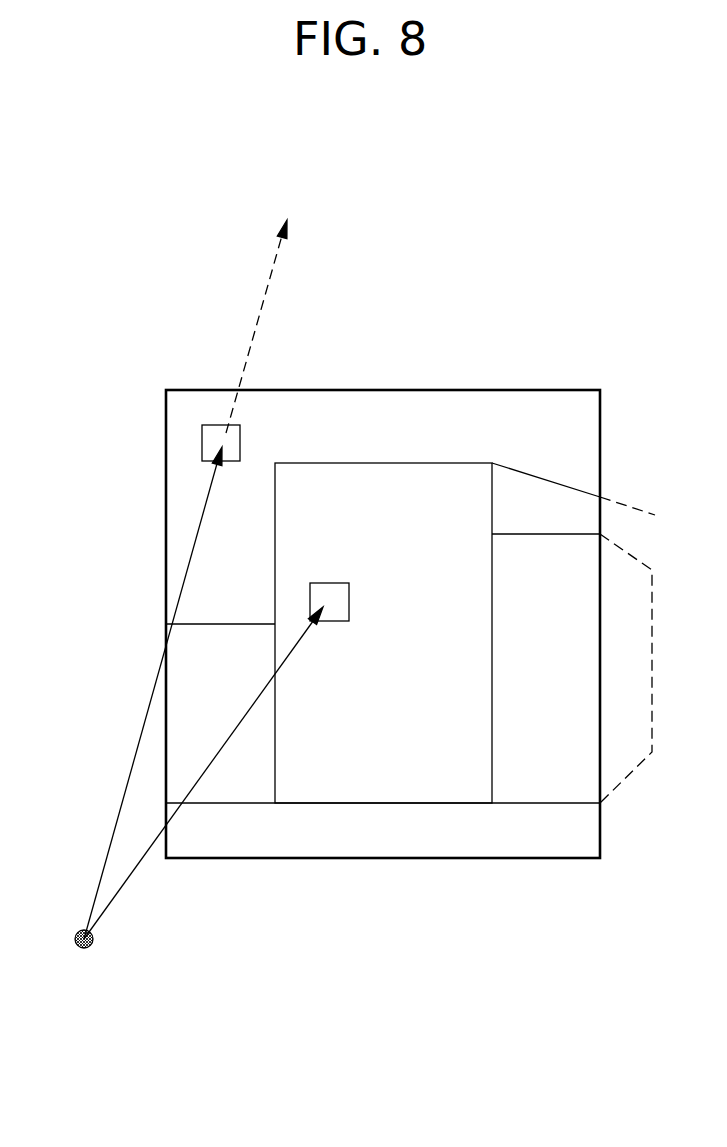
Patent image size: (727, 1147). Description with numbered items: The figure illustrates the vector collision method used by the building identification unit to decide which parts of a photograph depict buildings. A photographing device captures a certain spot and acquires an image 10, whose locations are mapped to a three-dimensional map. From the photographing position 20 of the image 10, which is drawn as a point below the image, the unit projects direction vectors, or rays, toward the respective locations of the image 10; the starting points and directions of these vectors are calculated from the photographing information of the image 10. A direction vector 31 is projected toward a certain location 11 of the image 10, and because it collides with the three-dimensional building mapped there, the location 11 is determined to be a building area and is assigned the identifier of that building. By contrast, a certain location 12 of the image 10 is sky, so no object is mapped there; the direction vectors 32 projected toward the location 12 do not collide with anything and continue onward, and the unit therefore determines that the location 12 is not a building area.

The image 10 is at (522, 390).
The location 11 is at (330, 583).
The location 12 is at (202, 440).
The photographing position 20 is at (84, 948).
The direction vector 31 is at (130, 877).
The direction vectors 32 is at (138, 743).